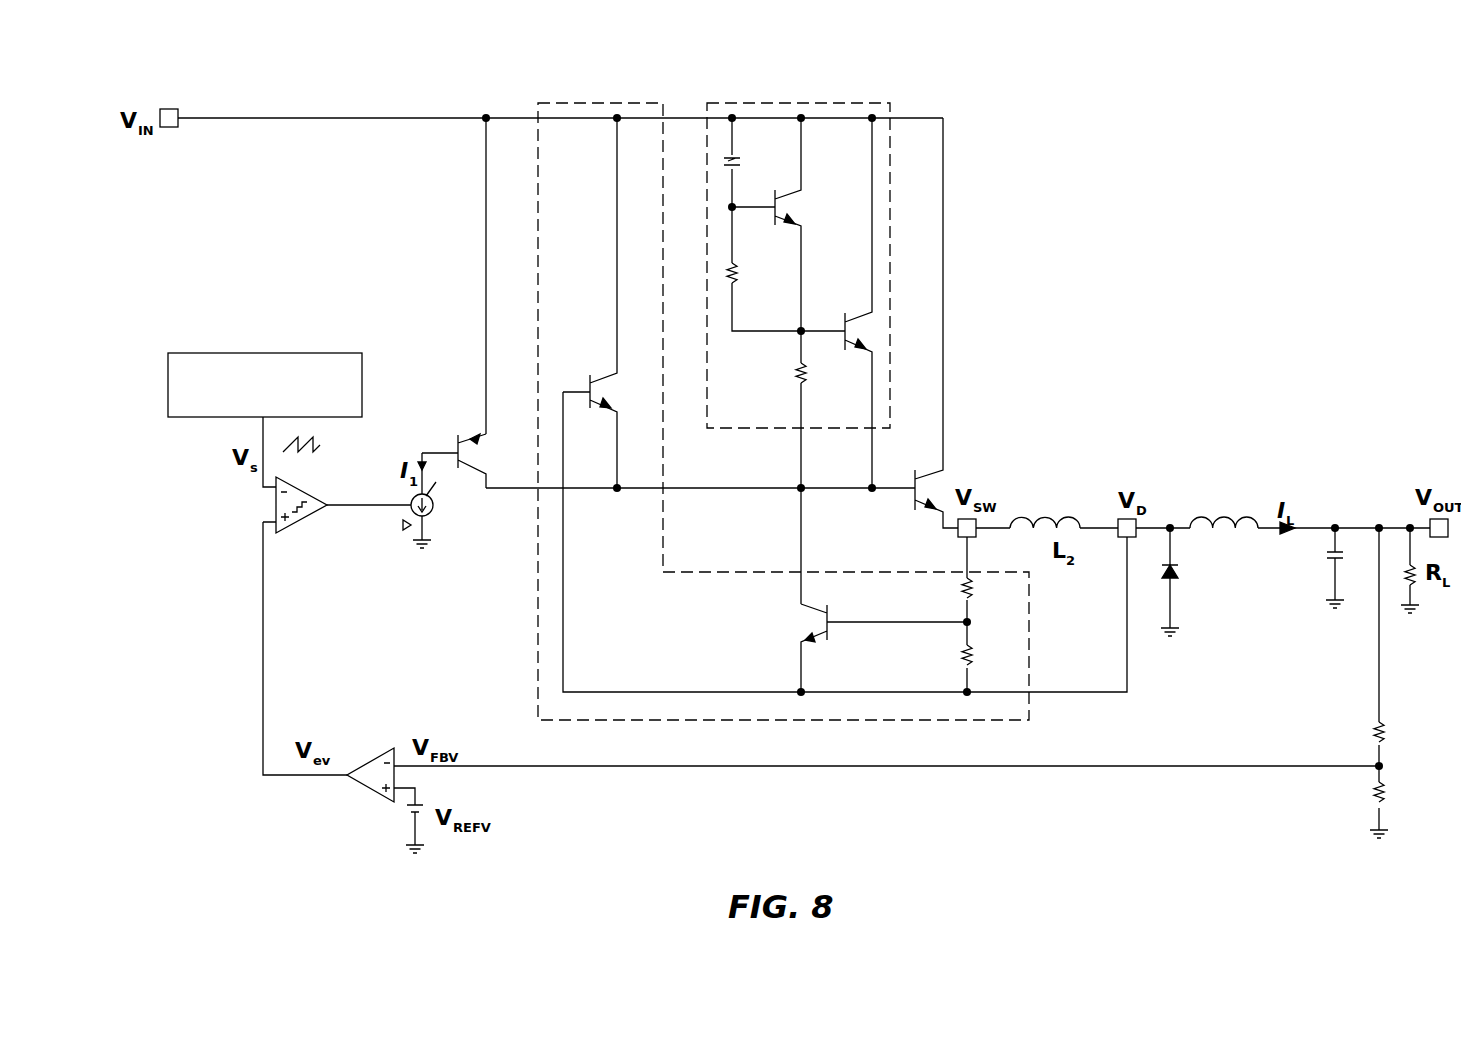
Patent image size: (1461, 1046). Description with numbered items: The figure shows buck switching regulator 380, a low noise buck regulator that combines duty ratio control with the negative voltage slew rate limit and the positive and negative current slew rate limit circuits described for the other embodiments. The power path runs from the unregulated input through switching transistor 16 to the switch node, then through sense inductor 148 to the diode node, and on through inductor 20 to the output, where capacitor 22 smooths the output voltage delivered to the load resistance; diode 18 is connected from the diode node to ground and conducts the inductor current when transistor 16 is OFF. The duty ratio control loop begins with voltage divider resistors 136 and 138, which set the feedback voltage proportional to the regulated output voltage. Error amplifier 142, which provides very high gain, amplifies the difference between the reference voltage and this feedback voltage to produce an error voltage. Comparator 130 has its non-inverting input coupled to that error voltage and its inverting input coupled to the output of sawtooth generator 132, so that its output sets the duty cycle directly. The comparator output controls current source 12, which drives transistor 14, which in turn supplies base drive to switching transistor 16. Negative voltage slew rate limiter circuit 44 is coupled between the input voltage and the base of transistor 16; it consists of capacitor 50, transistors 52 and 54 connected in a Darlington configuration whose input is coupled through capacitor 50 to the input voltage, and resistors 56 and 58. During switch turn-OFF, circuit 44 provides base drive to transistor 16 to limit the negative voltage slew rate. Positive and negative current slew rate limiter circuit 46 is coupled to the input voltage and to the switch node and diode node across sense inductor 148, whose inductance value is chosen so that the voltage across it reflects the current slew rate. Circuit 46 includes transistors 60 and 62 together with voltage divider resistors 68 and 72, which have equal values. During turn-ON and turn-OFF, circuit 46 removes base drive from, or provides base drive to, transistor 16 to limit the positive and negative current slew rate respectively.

The controlled current source 12 is at (430, 514).
The transistor 14 is at (478, 433).
The transistor 16 is at (922, 508).
The diode 18 is at (1178, 572).
The inductor 20 is at (1228, 515).
The capacitor 22 is at (1325, 553).
The negative voltage slew rate limiter circuit 44 is at (890, 103).
The positive and negative current slew rate limiter circuit 46 is at (1029, 720).
The capacitor 50 is at (740, 166).
The transistor 52 is at (790, 195).
The transistor 54 is at (862, 312).
The resistor 56 is at (738, 272).
The resistor 58 is at (795, 373).
The transistor 60 is at (600, 380).
The transistor 62 is at (805, 605).
The voltage divider resistor 68 is at (973, 585).
The voltage divider resistor 72 is at (973, 650).
The comparator 130 is at (308, 517).
The sawtooth generator 132 is at (245, 353).
The voltage divider resistor 136 is at (1385, 730).
The voltage divider resistor 138 is at (1385, 790).
The error amplifier 142 is at (352, 785).
The sense inductor 148 is at (1047, 515).
The buck switching regulator 380 is at (1198, 112).